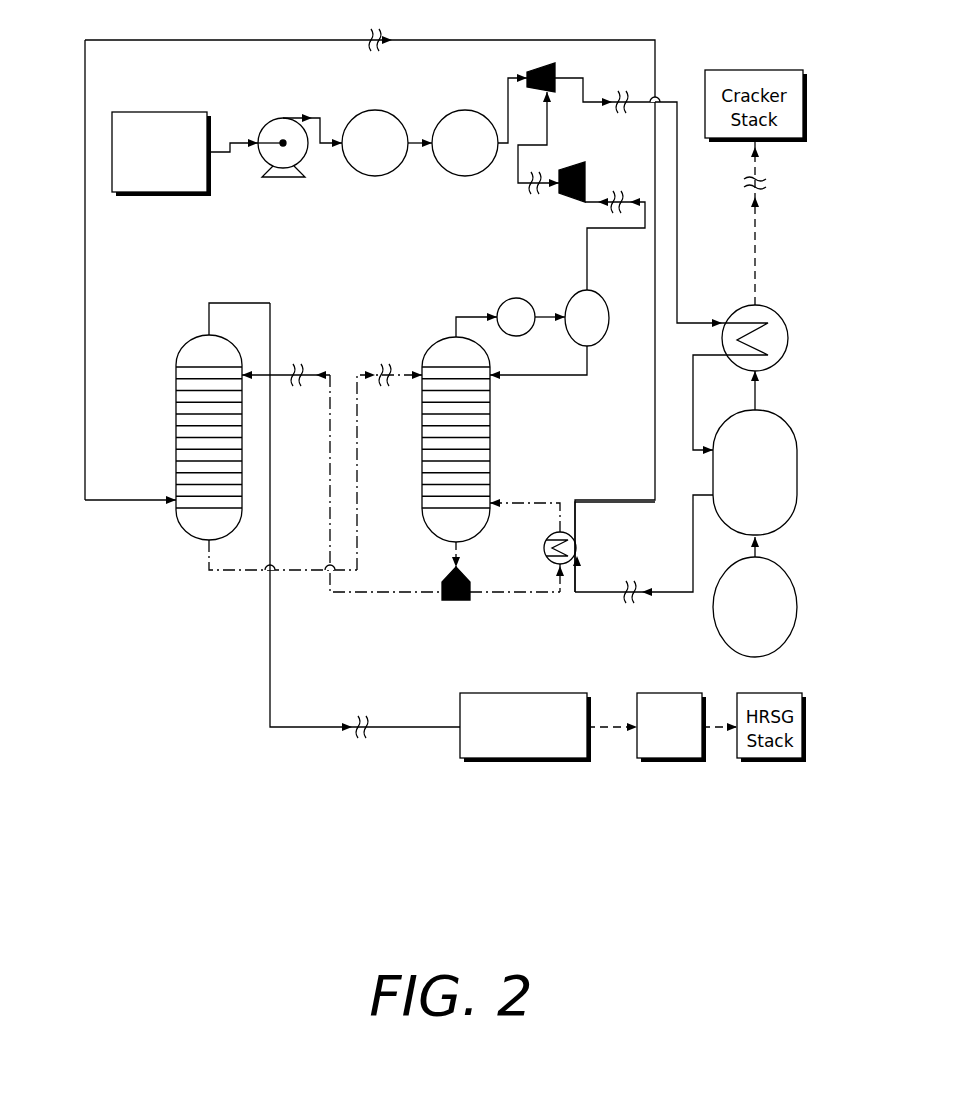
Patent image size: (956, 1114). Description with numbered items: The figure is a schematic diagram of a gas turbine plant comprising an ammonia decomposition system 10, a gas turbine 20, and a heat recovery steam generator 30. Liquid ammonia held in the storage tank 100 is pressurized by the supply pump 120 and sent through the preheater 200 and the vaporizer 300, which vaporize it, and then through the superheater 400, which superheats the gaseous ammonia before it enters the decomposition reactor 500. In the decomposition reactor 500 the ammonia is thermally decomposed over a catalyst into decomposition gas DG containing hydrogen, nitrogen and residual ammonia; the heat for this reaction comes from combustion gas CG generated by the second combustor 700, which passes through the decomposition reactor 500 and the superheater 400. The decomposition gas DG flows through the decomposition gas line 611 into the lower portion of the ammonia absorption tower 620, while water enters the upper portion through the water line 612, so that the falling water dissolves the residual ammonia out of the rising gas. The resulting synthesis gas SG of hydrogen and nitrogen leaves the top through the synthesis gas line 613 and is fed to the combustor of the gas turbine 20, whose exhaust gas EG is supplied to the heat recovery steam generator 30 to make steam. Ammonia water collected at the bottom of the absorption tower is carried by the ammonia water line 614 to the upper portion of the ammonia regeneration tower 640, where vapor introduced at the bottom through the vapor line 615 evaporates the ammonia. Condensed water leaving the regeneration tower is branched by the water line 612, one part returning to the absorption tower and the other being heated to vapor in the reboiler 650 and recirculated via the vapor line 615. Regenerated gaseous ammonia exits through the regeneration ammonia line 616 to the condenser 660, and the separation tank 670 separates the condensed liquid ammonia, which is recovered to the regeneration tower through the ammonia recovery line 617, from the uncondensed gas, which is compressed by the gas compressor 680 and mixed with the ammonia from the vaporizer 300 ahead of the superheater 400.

The ammonia decomposition system 10 is at (797, 288).
The gas turbine 20 is at (521, 693).
The heat recovery steam generator 30 is at (668, 693).
The storage tank 100 is at (162, 110).
The supply pump 120 is at (282, 128).
The preheater 200 is at (375, 132).
The vaporizer 300 is at (465, 132).
The superheater 400 is at (789, 338).
The decomposition reactor 500 is at (799, 472).
The second combustor 700 is at (799, 605).
The decomposition gas line 611 is at (110, 505).
The water line 612 is at (320, 374).
The synthesis gas line 613 is at (265, 589).
The ammonia water line 614 is at (364, 374).
The vapor line 615 is at (540, 500).
The regeneration ammonia line 616 is at (475, 317).
The ammonia recovery line 617 is at (537, 378).
The ammonia absorption tower 620 is at (174, 383).
The ammonia regeneration tower 640 is at (425, 512).
The reboiler 650 is at (544, 551).
The condenser 660 is at (514, 299).
The separation tank 670 is at (603, 294).
The gas compressor 680 is at (571, 168).
The decomposition gas DG is at (85, 98).
The synthesis gas SG is at (270, 658).
The combustion gas CG is at (757, 553).
The exhaust gas EG is at (604, 721).